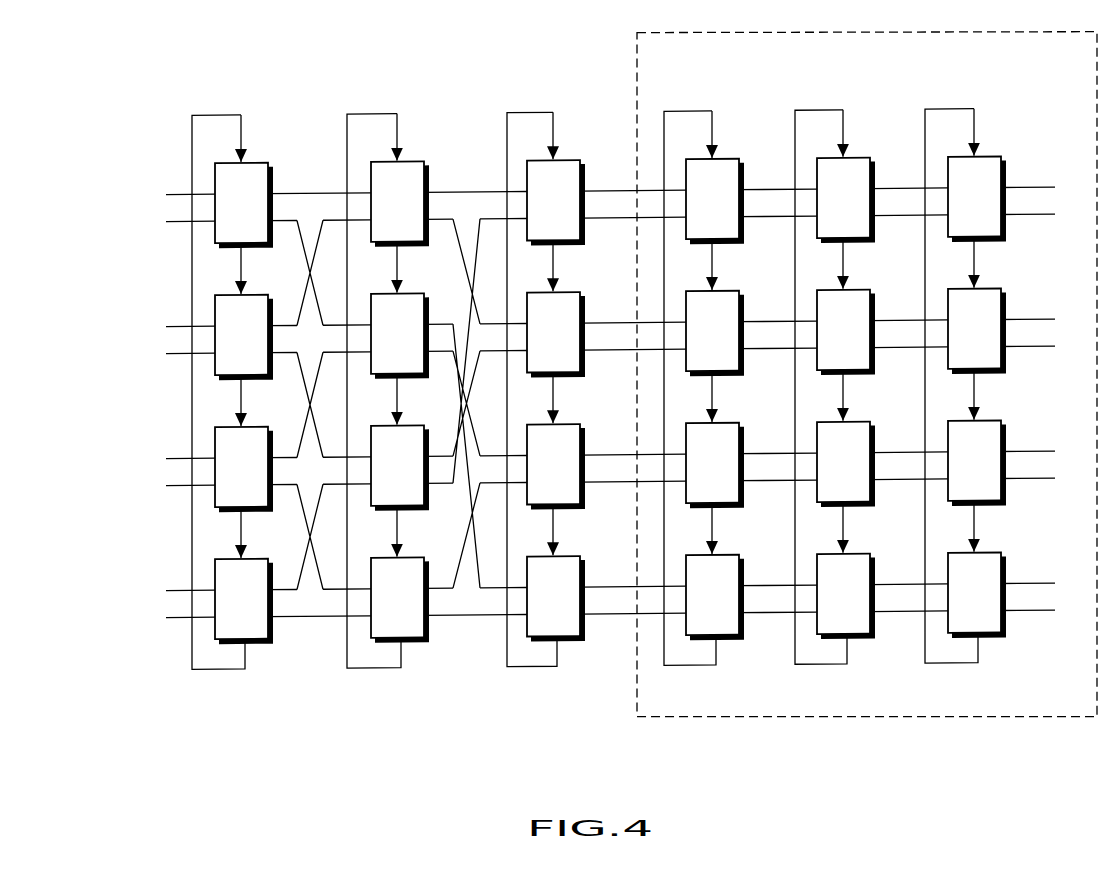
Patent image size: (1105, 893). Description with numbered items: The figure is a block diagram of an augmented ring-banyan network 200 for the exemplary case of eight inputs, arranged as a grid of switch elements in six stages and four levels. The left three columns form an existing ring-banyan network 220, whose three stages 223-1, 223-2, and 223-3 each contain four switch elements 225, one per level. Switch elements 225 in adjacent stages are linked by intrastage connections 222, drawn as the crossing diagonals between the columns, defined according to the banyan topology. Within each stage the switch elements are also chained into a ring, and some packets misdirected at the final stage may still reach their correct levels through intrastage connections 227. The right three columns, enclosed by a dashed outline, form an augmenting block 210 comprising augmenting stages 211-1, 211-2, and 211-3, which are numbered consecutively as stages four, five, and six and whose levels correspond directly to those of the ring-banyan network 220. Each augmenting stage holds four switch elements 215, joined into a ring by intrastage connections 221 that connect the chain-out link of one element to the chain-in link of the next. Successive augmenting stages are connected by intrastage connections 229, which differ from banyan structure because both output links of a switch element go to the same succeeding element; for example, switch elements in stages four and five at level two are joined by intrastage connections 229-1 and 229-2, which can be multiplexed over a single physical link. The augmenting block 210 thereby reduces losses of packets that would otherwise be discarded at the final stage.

The augmented ring-banyan network 200 is at (171, 775).
The augmenting block 210 is at (875, 725).
The augmenting stage 211-1 is at (745, 116).
The augmenting stage 211-2 is at (878, 116).
The augmenting stage 211-3 is at (1016, 115).
The switch element 215 is at (1001, 243).
The ring-banyan network 220 is at (207, 757).
The intrastage connection 221 is at (688, 115).
The intrastage connection 222 is at (303, 563).
The stage 223-1 is at (234, 718).
The stage 223-2 is at (383, 716).
The stage 223-3 is at (545, 715).
The switch element 225 is at (268, 163).
The intrastage connection 227 is at (543, 115).
The intrastage connection 229 is at (898, 185).
The intrastage connection 229-1 is at (782, 458).
The intrastage connection 229-2 is at (782, 487).